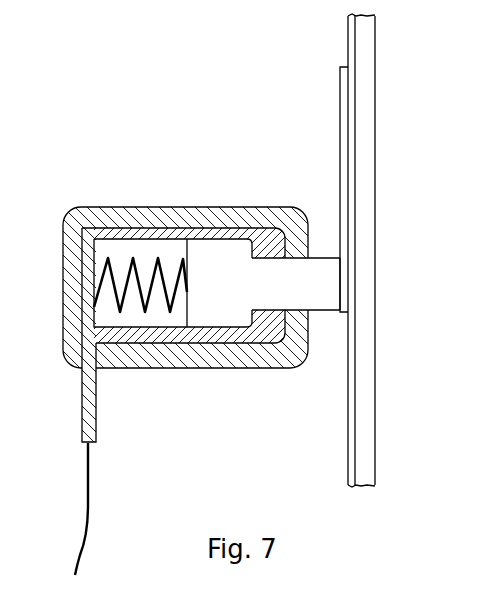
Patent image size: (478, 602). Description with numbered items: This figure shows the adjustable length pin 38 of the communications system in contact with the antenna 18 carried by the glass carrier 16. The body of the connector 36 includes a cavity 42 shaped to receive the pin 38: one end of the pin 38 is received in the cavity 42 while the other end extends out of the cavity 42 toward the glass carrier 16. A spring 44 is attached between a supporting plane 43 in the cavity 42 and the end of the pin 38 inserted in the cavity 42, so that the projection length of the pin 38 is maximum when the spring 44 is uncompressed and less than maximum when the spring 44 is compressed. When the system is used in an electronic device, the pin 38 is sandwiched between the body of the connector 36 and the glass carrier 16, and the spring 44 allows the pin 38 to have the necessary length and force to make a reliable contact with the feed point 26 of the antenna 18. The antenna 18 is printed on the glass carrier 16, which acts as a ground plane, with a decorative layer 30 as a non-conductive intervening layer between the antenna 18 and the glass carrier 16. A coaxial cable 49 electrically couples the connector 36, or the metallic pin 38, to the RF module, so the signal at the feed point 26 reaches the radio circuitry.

The glass carrier 16 is at (377, 81).
The antenna 18 is at (343, 102).
The feed point 26 is at (344, 284).
The decorative layer 30 is at (356, 193).
The connector 36 is at (148, 206).
The pin 38 is at (327, 311).
The cavity 42 is at (175, 247).
The supporting plane 43 is at (82, 278).
The spring 44 is at (147, 308).
The coaxial cable 49 is at (88, 513).